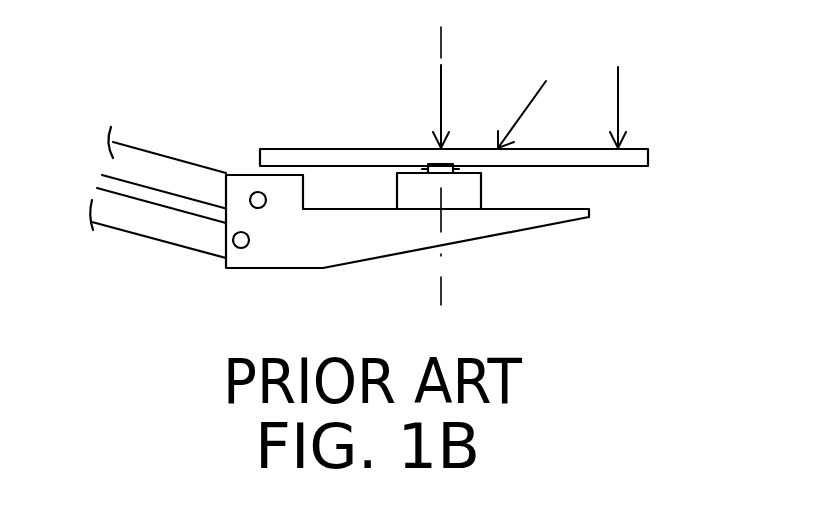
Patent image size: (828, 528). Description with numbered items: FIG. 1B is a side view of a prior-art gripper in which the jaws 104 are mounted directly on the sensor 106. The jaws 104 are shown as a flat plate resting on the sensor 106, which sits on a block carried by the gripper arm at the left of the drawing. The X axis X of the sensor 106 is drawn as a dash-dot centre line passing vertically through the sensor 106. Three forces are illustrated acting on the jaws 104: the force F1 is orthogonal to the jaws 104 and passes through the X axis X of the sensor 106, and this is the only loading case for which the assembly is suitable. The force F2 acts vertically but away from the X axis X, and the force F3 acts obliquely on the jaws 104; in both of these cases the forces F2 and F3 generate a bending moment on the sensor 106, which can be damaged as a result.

The jaws 104 is at (315, 157).
The sensor 106 is at (462, 198).
The X axis X is at (441, 297).
The force F1 is at (459, 105).
The force F2 is at (637, 103).
The force F3 is at (541, 114).